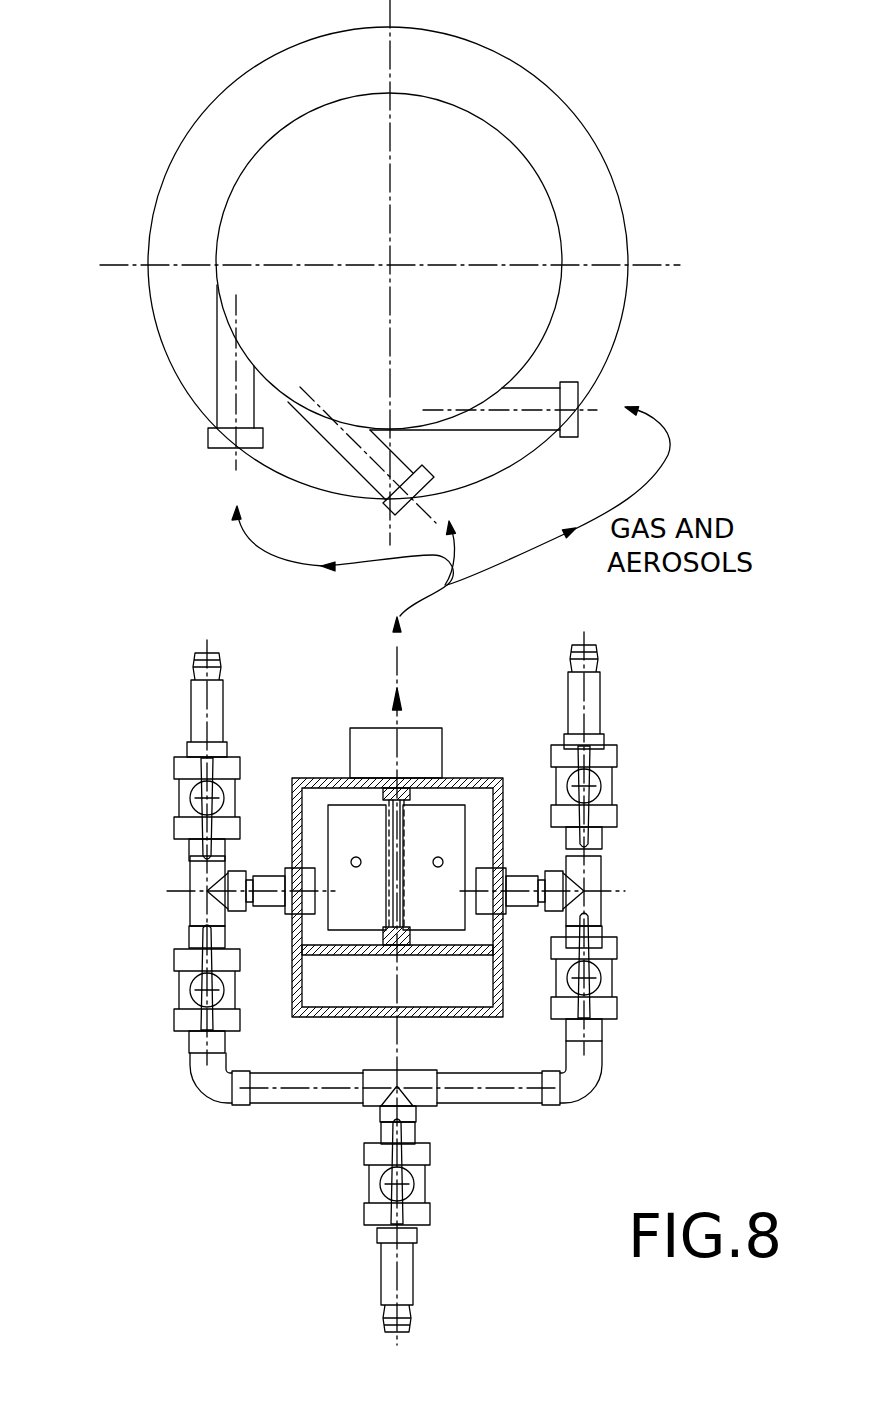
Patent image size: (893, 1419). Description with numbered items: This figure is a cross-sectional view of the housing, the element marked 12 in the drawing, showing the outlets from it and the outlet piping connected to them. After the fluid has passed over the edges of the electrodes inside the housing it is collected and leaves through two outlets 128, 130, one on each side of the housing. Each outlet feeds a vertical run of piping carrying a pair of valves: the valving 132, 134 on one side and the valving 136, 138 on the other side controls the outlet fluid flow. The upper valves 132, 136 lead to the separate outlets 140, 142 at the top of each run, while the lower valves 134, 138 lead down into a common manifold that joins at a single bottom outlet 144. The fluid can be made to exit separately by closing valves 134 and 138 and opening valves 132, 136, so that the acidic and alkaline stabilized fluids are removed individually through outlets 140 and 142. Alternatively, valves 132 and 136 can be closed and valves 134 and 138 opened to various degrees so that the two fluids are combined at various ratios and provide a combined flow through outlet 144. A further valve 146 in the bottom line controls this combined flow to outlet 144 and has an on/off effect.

The sample cell assembly 12 is at (420, 705).
The outlet 128 is at (525, 873).
The outlet 130 is at (268, 883).
The valve 132 is at (607, 787).
The valve 134 is at (612, 982).
The valve 136 is at (185, 805).
The valve 138 is at (183, 1007).
The outlet 140 is at (594, 653).
The outlet 142 is at (193, 660).
The outlet 144 is at (390, 1322).
The valve 146 is at (370, 1190).